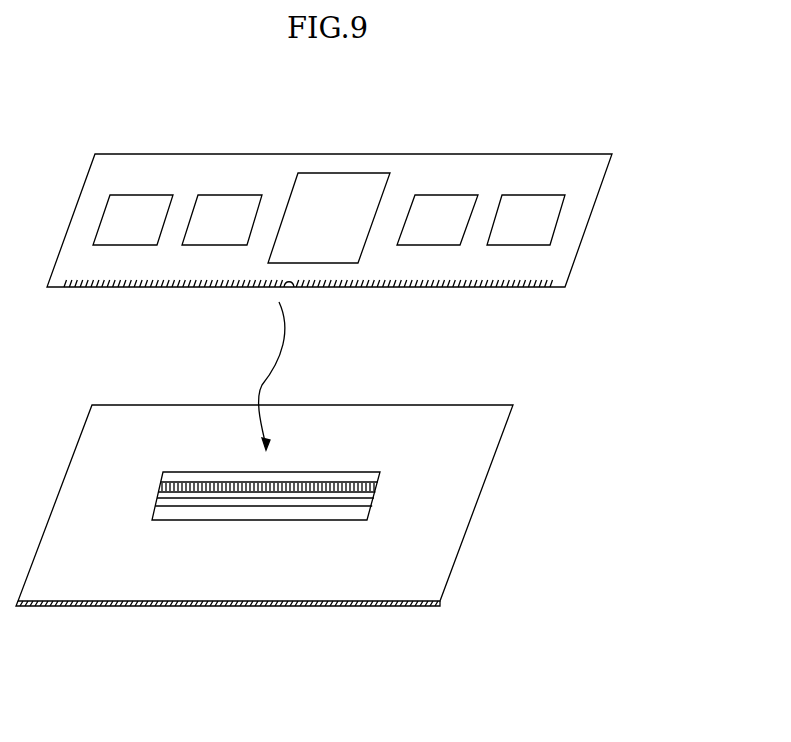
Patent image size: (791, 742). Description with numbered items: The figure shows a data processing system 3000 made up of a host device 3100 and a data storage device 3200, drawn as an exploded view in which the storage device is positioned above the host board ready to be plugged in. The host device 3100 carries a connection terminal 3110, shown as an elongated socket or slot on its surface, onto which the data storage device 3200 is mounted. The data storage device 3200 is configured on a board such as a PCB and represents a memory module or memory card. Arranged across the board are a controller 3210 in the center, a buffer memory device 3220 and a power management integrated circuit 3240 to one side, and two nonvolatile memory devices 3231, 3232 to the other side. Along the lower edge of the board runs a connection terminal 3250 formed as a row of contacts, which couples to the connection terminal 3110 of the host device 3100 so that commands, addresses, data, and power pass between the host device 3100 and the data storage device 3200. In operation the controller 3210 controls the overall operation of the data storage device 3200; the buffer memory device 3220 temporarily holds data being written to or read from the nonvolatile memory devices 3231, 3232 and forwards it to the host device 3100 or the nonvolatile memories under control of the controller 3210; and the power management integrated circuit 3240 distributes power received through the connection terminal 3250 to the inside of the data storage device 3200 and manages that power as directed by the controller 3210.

The data processing system 3000 is at (190, 121).
The host device 3100 is at (264, 505).
The connection terminal 3110 is at (392, 467).
The data storage device 3200 is at (329, 242).
The controller 3210 is at (329, 218).
The buffer memory device 3220 is at (222, 220).
The nonvolatile memory device 3231 is at (437, 220).
The nonvolatile memory device 3232 is at (526, 220).
The power management integrated circuit 3240 is at (133, 220).
The connection terminal 3250 is at (79, 289).